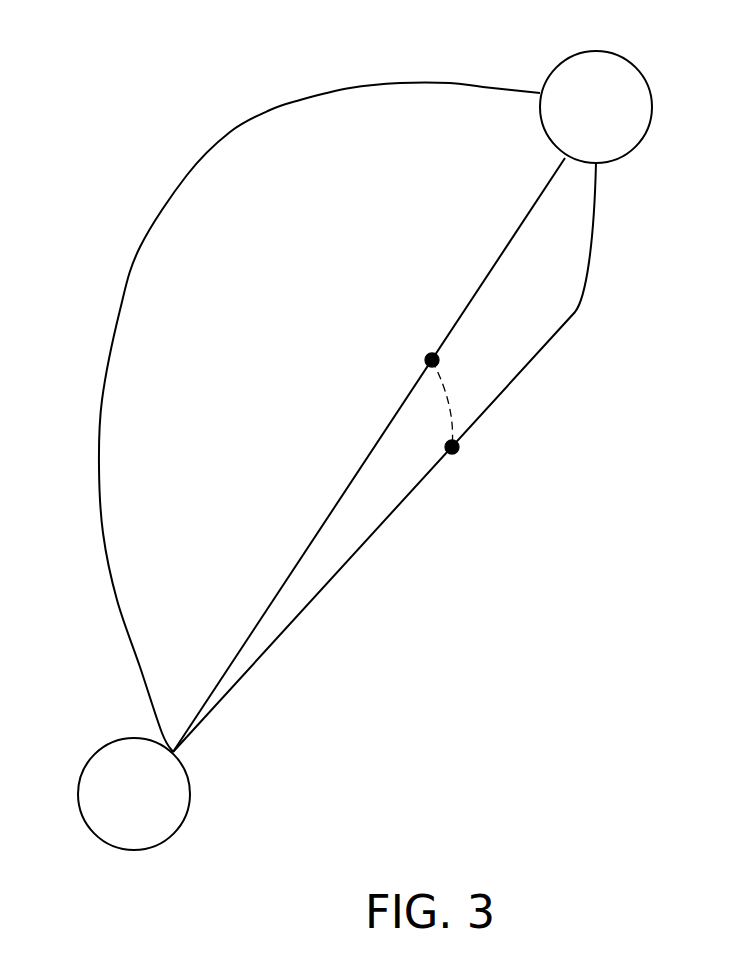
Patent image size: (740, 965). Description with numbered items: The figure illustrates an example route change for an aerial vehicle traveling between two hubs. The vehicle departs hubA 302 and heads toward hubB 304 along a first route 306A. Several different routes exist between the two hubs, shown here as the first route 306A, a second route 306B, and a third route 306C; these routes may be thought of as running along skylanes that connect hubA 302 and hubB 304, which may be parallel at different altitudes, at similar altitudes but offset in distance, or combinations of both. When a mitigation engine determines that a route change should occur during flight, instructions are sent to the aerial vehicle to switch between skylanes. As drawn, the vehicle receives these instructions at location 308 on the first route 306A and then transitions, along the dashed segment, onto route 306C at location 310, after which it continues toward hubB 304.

The hubA 302 is at (568, 63).
The hubB 304 is at (98, 748).
The first route 306A is at (522, 222).
The route 306B is at (187, 175).
The route 306C is at (568, 310).
The location 308 is at (428, 357).
The location 310 is at (453, 453).